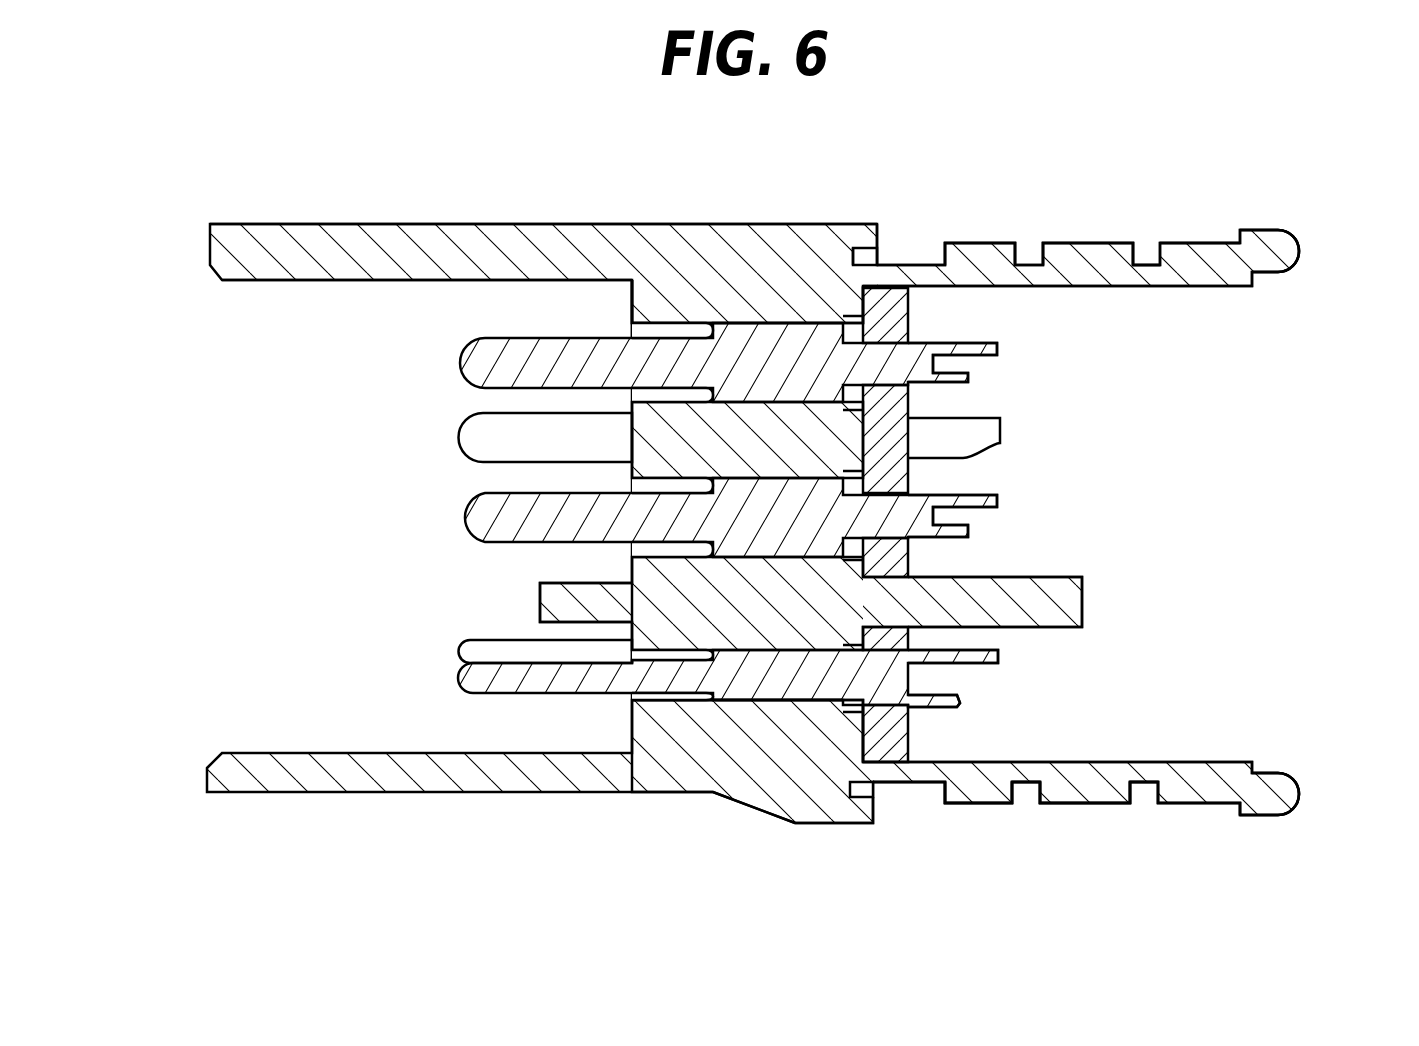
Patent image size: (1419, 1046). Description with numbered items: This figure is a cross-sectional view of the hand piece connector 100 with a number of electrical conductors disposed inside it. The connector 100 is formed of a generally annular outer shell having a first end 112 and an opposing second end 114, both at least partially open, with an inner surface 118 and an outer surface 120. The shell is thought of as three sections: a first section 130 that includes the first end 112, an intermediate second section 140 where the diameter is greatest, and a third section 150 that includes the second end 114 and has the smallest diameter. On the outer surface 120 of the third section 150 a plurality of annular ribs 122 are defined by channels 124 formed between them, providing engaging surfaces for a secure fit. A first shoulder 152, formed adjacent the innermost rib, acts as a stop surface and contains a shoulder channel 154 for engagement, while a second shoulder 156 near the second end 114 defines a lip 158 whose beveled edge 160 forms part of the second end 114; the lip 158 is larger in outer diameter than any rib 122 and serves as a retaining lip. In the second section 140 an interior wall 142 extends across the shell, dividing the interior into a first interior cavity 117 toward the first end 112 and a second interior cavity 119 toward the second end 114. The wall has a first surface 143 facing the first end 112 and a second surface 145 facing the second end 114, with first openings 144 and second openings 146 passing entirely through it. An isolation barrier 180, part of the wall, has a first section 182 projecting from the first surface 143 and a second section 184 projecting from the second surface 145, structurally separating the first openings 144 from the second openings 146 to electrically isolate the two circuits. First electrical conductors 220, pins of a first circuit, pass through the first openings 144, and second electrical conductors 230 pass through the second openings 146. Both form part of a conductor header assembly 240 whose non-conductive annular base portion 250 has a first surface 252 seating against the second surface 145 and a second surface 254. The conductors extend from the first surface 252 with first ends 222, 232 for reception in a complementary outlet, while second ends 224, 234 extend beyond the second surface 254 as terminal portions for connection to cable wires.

The hand piece connector 100 is at (311, 180).
The first end 112 is at (210, 245).
The second end 114 is at (1300, 257).
The first interior cavity 117 is at (312, 497).
The inner surface 118 is at (345, 283).
The second interior cavity 119 is at (1175, 660).
The outer surface 120 is at (440, 222).
The ribs 122 is at (975, 242).
The channels 124 is at (1145, 263).
The first section 130 is at (350, 804).
The second section 140 is at (684, 544).
The interior wall 142 is at (742, 750).
The first surface 143 is at (632, 300).
The first openings 144 is at (672, 322).
The second surface 145 is at (848, 316).
The second openings 146 is at (672, 702).
The third section 150 is at (1070, 828).
The first shoulder 152 is at (878, 241).
The shoulder channel 154 is at (860, 255).
The second shoulder 156 is at (1240, 240).
The lip 158 is at (1266, 230).
The beveled edge 160 is at (1300, 792).
The isolation barrier 180 is at (822, 589).
The first section of isolation barrier 182 is at (540, 605).
The second section of isolation barrier 184 is at (1083, 603).
The first electrical conductors 220 is at (530, 510).
The first ends of first electrical conductors 222 is at (462, 360).
The second ends of first electrical conductors 224 is at (1000, 350).
The second electrical conductors 230 is at (518, 690).
The first ends of second electrical conductors 232 is at (460, 650).
The second ends of second electrical conductors 234 is at (998, 663).
The conductor header assembly 240 is at (976, 525).
The base portion 250 is at (885, 310).
The first surface of base portion 252 is at (860, 438).
The second surface of base portion 254 is at (905, 550).